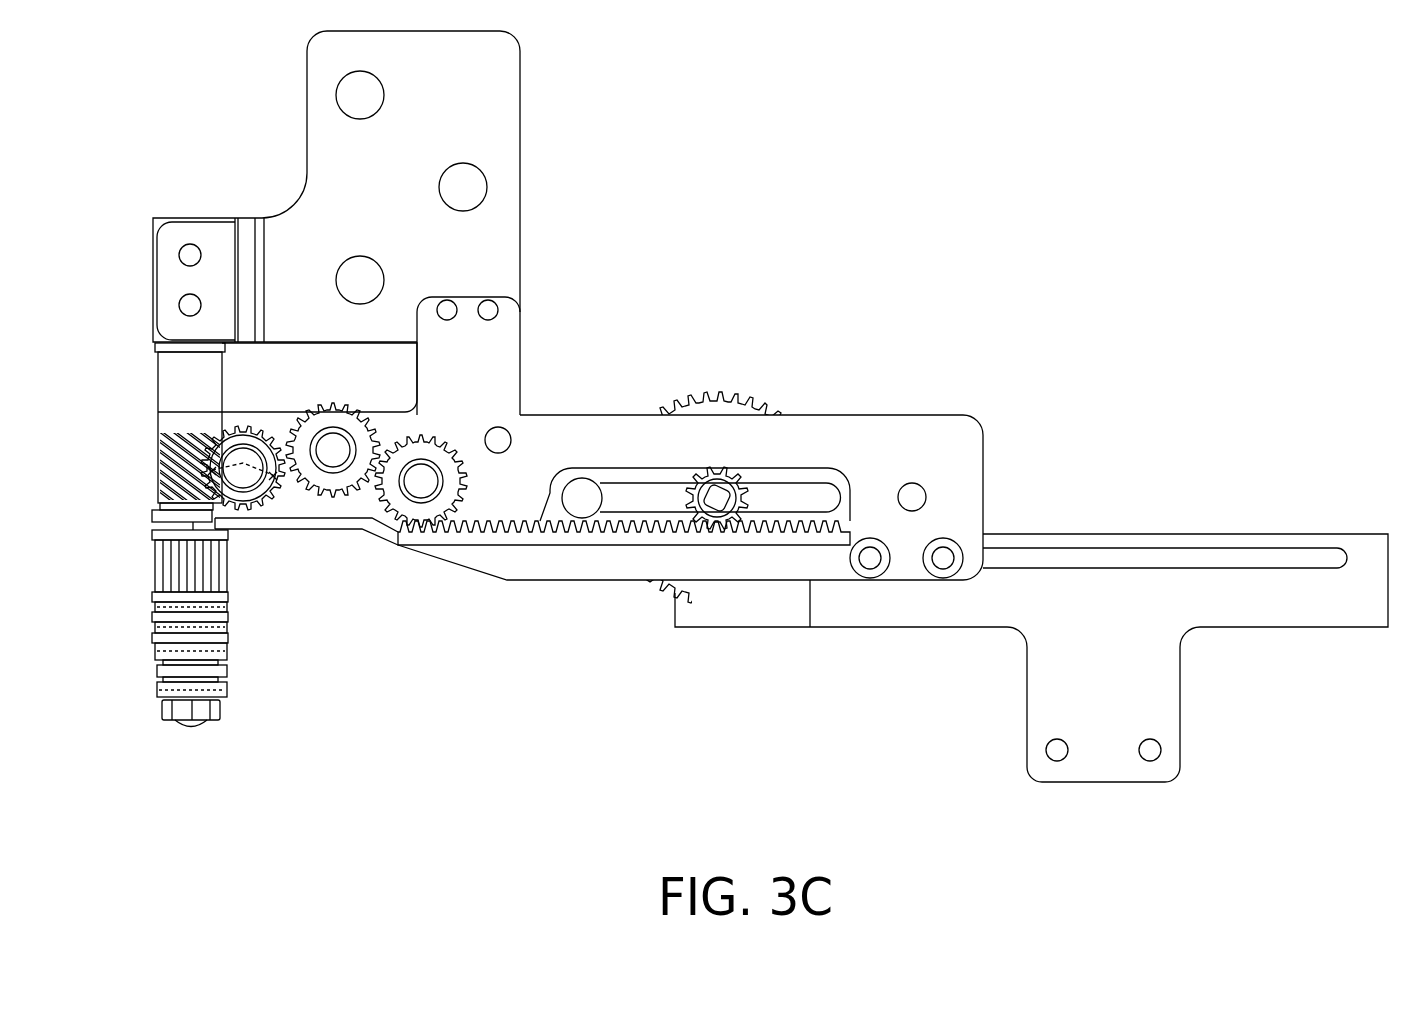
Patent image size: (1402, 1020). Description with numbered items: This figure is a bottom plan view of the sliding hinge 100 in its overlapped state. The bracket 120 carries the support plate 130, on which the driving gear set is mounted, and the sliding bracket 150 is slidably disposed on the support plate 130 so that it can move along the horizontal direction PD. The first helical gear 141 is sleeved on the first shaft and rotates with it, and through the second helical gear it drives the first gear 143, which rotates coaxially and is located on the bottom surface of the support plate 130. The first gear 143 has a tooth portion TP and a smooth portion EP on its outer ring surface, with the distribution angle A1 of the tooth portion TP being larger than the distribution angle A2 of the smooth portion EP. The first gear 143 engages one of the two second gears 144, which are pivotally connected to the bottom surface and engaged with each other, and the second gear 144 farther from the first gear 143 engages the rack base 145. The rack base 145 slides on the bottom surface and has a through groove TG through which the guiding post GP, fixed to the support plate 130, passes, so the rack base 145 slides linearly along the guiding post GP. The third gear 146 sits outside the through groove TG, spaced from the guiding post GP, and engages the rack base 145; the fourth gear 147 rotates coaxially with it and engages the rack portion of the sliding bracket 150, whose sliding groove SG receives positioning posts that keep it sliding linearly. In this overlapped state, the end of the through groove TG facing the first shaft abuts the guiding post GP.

The sliding hinge 100 is at (1315, 853).
The bracket 120 is at (505, 100).
The support plate 130 is at (913, 433).
The first helical gear 141 is at (160, 465).
The first gear 143 is at (265, 498).
The second gear 144 is at (402, 503).
The rack base 145 is at (590, 534).
The third gear 146 is at (722, 497).
The fourth gear 147 is at (708, 397).
The sliding bracket 150 is at (1302, 613).
The tooth portion TP is at (212, 418).
The distribution angle of the tooth portion A1 is at (242, 432).
The distribution angle of the smooth portion A2 is at (248, 500).
The smooth portion EP is at (244, 512).
The guiding post GP is at (580, 487).
The through groove TG is at (645, 495).
The sliding groove SG is at (1212, 560).
The horizontal direction PD is at (897, 170).